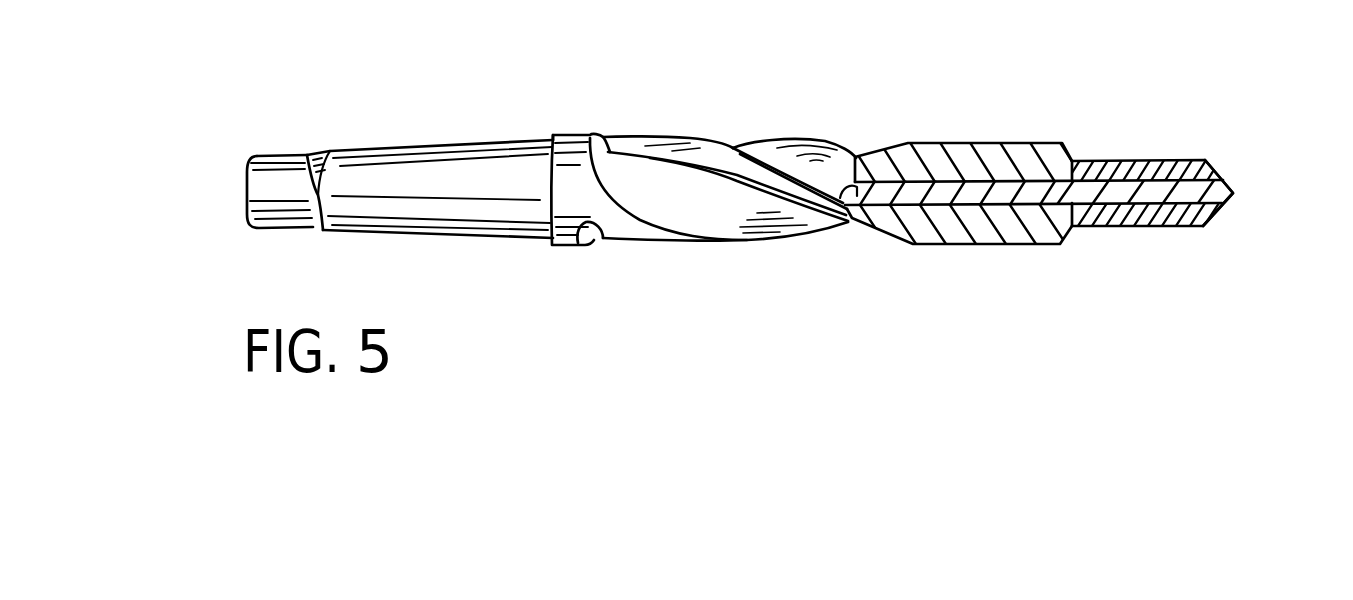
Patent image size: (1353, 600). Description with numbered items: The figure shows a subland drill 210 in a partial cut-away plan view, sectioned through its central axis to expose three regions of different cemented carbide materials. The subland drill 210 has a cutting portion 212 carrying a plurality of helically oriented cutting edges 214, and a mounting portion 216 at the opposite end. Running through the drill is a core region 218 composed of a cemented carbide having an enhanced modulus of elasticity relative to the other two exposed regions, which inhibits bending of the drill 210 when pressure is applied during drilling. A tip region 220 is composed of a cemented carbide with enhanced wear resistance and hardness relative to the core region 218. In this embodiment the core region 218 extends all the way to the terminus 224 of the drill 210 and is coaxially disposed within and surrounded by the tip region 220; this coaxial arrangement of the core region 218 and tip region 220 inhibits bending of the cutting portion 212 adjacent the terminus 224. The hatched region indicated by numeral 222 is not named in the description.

The subland drill 210 is at (880, 90).
The cutting portion 212 is at (948, 248).
The helically oriented cutting edges 214 is at (672, 138).
The mounting portion 216 is at (393, 208).
The core region 218 is at (1040, 193).
The tip region 220 is at (1157, 168).
The threads 222 is at (987, 153).
The terminus 224 is at (1233, 194).